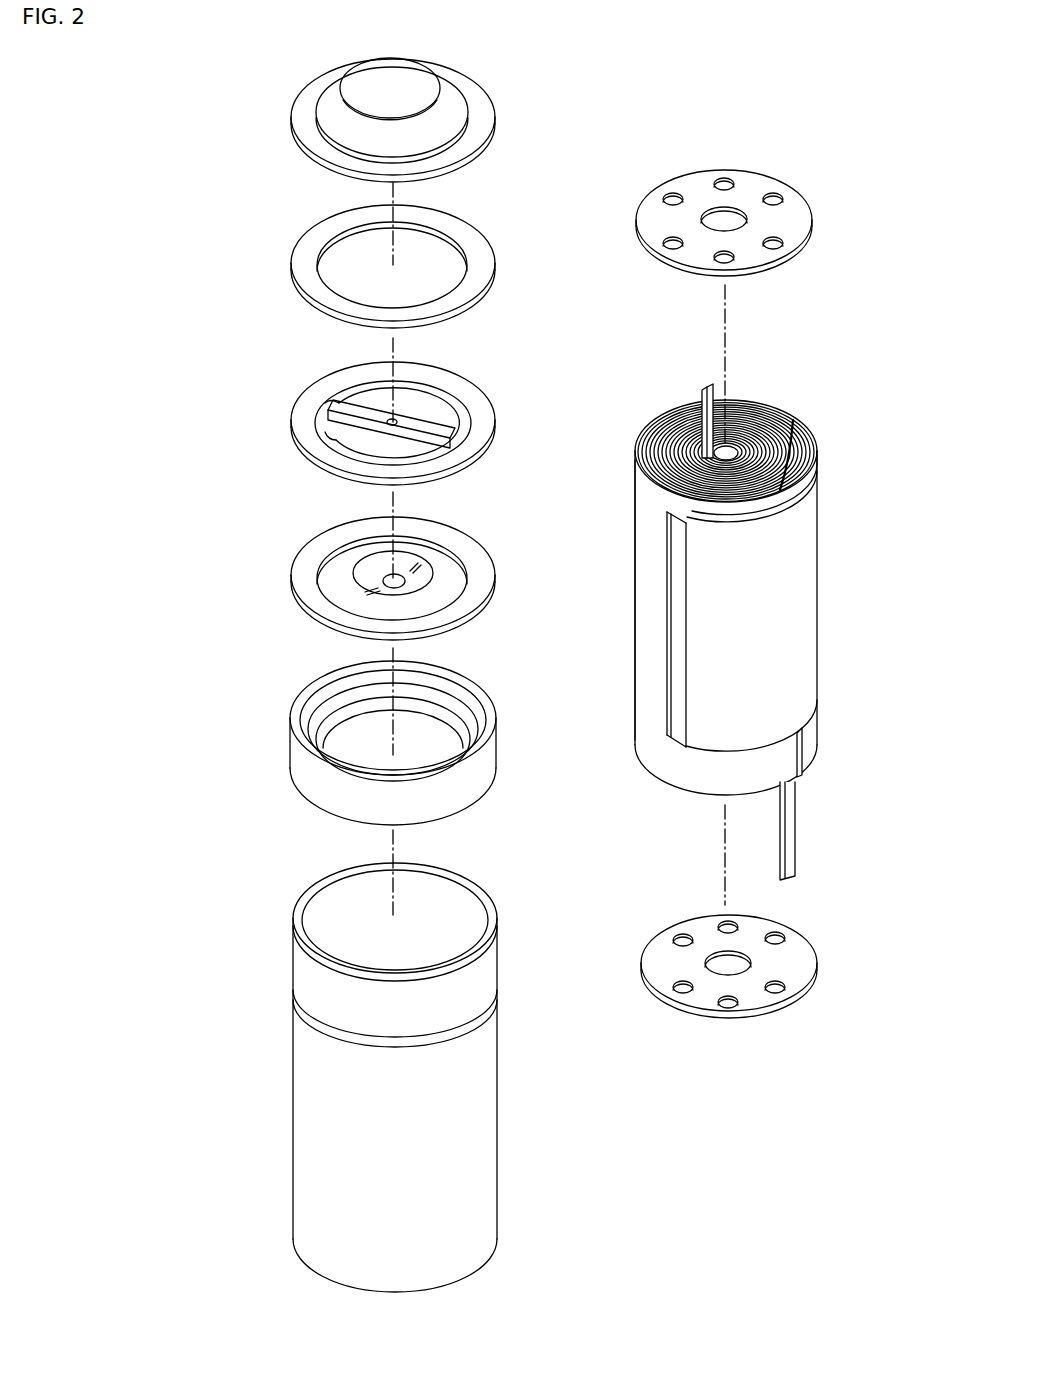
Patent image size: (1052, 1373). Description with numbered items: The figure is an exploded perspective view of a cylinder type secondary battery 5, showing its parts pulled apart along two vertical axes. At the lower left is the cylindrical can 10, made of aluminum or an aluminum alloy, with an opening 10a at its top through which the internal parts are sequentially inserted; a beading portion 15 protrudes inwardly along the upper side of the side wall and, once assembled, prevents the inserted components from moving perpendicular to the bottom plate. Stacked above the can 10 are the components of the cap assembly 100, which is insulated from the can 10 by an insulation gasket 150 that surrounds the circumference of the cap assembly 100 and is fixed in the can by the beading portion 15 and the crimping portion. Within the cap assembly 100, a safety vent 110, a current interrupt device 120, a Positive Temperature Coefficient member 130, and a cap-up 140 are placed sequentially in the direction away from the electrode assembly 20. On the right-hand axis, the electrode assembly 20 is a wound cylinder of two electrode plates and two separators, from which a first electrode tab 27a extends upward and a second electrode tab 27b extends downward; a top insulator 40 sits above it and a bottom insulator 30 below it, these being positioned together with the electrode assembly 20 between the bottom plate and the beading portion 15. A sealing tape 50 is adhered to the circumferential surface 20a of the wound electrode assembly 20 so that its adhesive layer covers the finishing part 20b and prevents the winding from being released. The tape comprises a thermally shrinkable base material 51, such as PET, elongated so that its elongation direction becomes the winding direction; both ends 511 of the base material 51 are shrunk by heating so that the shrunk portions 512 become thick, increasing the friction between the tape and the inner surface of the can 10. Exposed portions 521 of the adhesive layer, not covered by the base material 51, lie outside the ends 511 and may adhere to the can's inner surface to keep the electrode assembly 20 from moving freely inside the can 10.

The secondary battery 5 is at (740, 82).
The can 10 is at (359, 1069).
The opening 10a is at (322, 908).
The beading portion 15 is at (298, 1002).
The electrode assembly 20 is at (736, 608).
The circumferential surface 20a is at (647, 548).
The finishing part 20b is at (793, 435).
The first electrode tab 27a is at (707, 385).
The second electrode tab 27b is at (792, 828).
The bottom insulator 30 is at (805, 967).
The top insulator 40 is at (798, 217).
The sealing tape 50 is at (721, 624).
The base material 51 is at (716, 624).
The ends of the base material 511 is at (685, 593).
The shrunk portions 512 is at (698, 658).
The exposed portions 521 is at (673, 635).
The cap assembly 100 is at (182, 105).
The safety vent 110 is at (305, 580).
The current interrupt device 120 is at (305, 425).
The Positive Temperature Coefficient member 130 is at (302, 265).
The cap-up 140 is at (300, 114).
The insulation gasket 150 is at (300, 760).